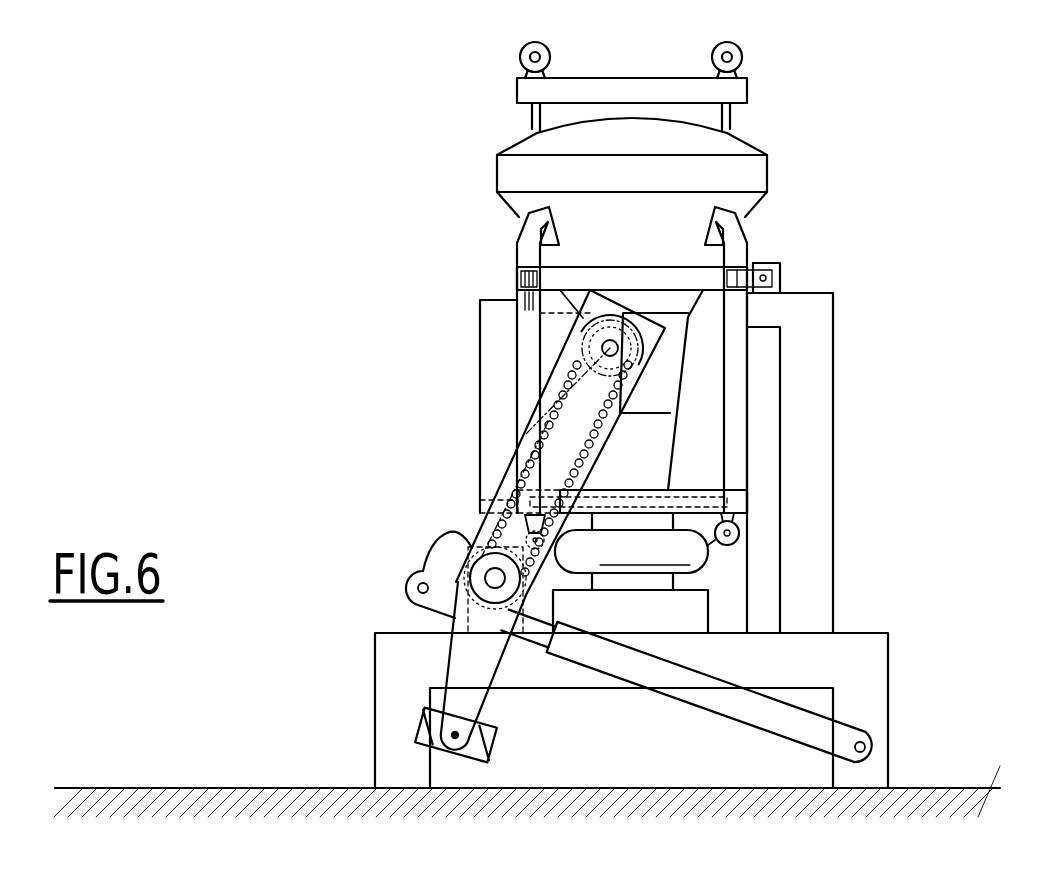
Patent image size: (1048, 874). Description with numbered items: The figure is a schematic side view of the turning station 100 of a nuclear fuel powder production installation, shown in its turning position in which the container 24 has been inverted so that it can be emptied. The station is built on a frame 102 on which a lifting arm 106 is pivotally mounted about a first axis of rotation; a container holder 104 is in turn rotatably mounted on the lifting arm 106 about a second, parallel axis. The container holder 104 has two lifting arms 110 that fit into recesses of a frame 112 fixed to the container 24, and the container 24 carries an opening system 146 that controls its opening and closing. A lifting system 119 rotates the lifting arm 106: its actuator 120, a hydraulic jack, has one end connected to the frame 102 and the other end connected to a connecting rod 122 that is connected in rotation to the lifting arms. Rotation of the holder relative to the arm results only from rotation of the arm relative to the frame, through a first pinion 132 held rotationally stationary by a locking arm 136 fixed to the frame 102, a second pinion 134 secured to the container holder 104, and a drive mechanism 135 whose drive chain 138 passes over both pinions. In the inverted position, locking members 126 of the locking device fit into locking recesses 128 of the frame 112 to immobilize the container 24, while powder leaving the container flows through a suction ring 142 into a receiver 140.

The container 24 is at (767, 173).
The turning station 100 is at (893, 325).
The frame 102 is at (845, 497).
The container holder 104 is at (462, 300).
The lifting arm 106 is at (597, 303).
The lifting arms 110 is at (697, 497).
The frame 112 is at (748, 387).
The lifting system 119 is at (813, 707).
The actuator 120 is at (697, 695).
The connecting rod 122 is at (445, 553).
The locking members 126 is at (780, 277).
The locking recesses 128 is at (735, 262).
The first pinion 132 is at (494, 577).
The second pinion 134 is at (609, 348).
The drive mechanism 135 is at (437, 388).
The locking arm 136 is at (482, 660).
The drive chain 138 is at (533, 447).
The receiver 140 is at (713, 612).
The suction ring 142 is at (708, 560).
The opening system 146 is at (743, 537).